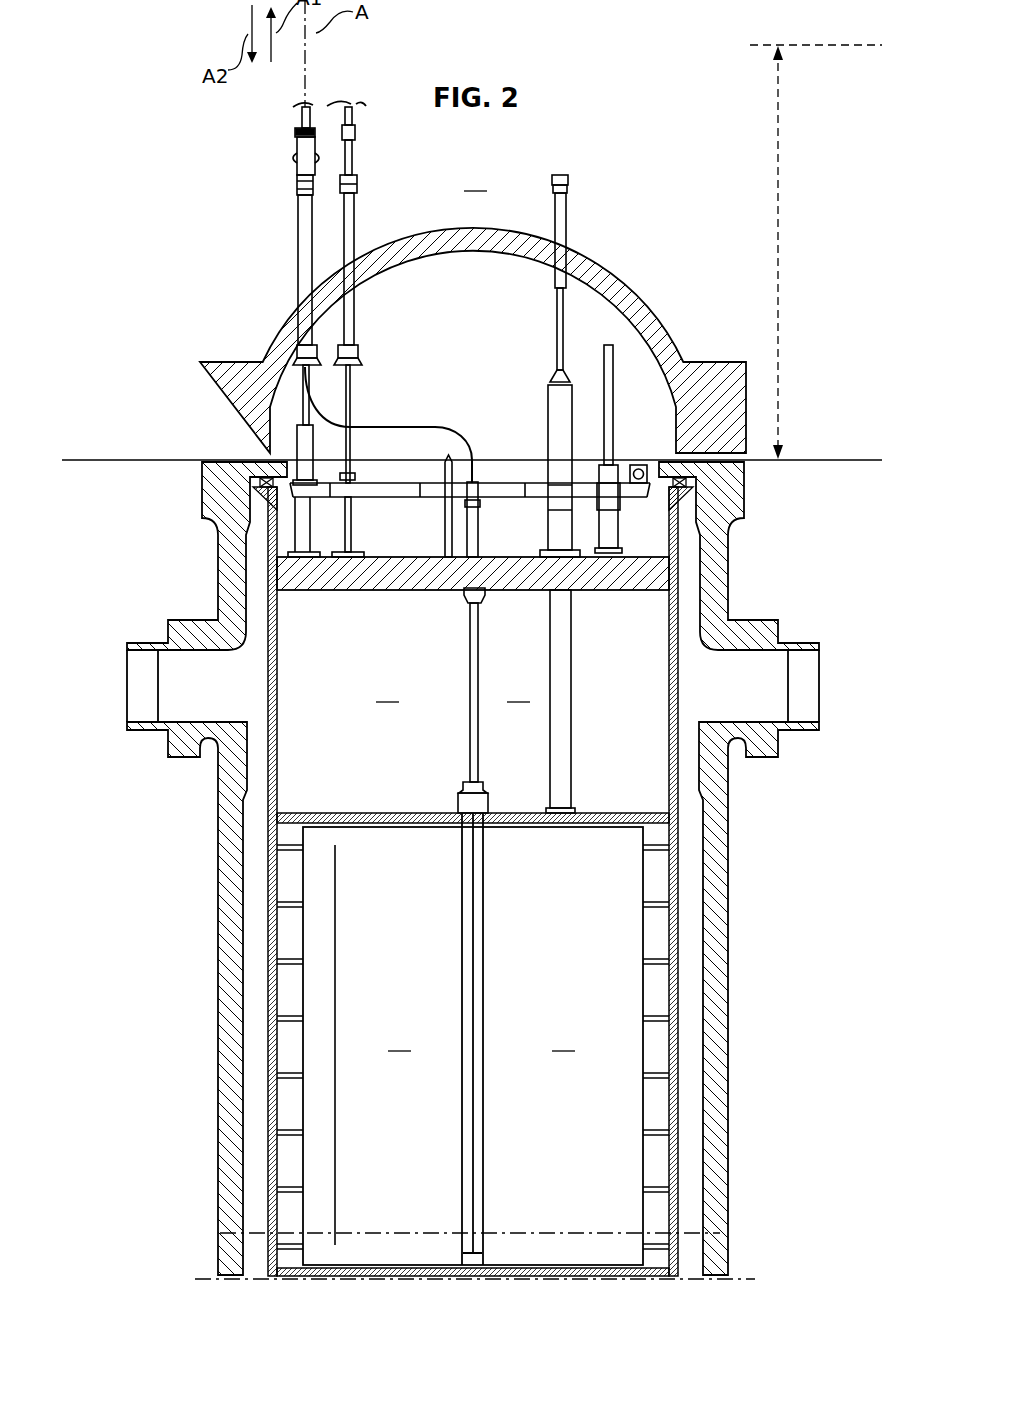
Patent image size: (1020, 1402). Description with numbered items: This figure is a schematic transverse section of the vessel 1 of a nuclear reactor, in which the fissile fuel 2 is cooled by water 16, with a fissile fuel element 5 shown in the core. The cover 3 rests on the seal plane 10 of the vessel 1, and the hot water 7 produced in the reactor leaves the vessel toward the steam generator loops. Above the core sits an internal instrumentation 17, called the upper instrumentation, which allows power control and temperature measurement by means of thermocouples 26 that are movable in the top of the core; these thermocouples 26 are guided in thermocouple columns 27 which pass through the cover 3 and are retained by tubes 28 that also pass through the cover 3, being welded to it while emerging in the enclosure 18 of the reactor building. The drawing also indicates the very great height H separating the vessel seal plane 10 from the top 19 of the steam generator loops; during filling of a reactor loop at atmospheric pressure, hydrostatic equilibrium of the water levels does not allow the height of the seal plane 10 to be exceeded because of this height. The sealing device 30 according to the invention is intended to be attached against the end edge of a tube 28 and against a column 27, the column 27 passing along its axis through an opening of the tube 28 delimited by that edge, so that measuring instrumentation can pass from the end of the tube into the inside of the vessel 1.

The vessel 1 is at (716, 877).
The fissile fuel 2 is at (465, 1107).
The cover 3 is at (650, 318).
The fissile fuel element 5 is at (480, 998).
The hot water 7 is at (803, 683).
The seal plane 10 is at (132, 459).
The water 16 is at (477, 865).
The internal instrumentation 17 is at (273, 174).
The enclosure 18 is at (477, 181).
The top 19 is at (814, 45).
The thermocouples 26 is at (404, 427).
The thermocouple column 27 is at (294, 409).
The tube 28 is at (292, 236).
The sealing device 30 is at (472, 947).